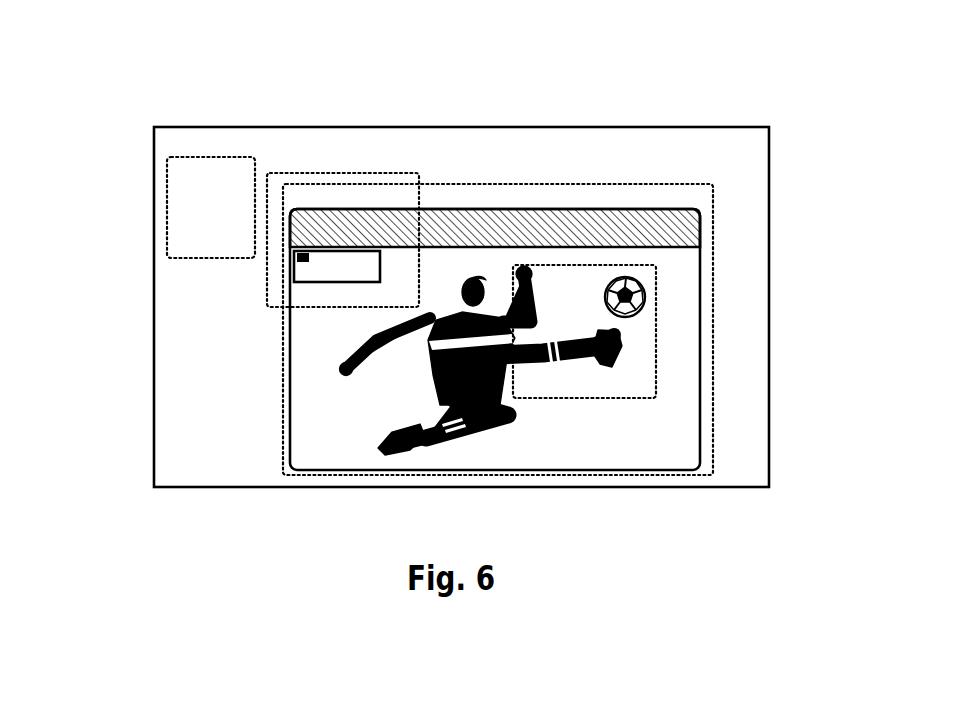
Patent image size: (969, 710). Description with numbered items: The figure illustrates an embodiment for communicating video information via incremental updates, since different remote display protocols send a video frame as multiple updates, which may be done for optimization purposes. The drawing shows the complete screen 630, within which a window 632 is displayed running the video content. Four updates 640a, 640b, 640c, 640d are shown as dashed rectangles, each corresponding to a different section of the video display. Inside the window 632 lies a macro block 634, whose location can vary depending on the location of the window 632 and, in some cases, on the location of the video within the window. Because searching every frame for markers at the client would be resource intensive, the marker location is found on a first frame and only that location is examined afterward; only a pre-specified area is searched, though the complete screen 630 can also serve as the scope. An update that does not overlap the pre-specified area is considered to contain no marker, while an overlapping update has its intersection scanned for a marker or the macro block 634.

The complete screen 630 is at (544, 127).
The window 632 is at (600, 210).
The macro block 634 is at (338, 282).
The update 640a is at (190, 157).
The update 640b is at (326, 173).
The update 640c is at (282, 328).
The update 640d is at (656, 329).